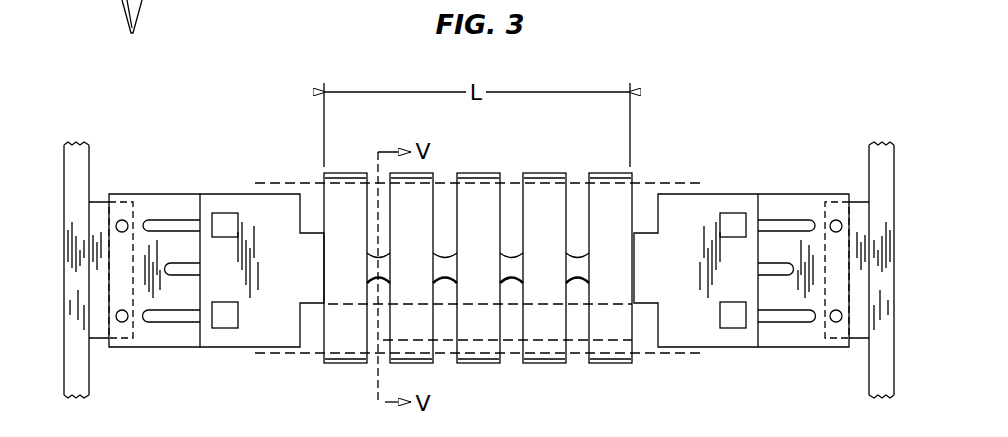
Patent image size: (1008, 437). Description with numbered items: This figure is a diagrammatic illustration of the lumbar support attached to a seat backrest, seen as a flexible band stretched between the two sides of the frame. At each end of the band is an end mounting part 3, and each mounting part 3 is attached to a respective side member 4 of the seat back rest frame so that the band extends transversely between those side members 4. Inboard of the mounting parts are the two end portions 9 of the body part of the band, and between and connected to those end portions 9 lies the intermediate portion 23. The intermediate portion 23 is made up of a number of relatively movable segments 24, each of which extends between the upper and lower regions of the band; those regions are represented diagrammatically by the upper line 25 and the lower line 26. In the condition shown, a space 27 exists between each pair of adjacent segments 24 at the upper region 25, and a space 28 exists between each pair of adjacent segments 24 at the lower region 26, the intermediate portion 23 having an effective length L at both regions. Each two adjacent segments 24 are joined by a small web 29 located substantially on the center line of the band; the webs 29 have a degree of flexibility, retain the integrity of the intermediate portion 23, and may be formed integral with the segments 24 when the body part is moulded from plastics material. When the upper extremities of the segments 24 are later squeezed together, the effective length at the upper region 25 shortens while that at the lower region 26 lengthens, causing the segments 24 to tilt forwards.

The end mounting part 3 is at (479, 267).
The side member 4 is at (77, 180).
The end portion 9 is at (218, 258).
The intermediate portion 23 is at (487, 267).
The segment 24 is at (326, 203).
The upper region line 25 is at (300, 183).
The lower region line 26 is at (292, 354).
The space 27 is at (445, 176).
The space 28 is at (375, 365).
The web 29 is at (372, 263).